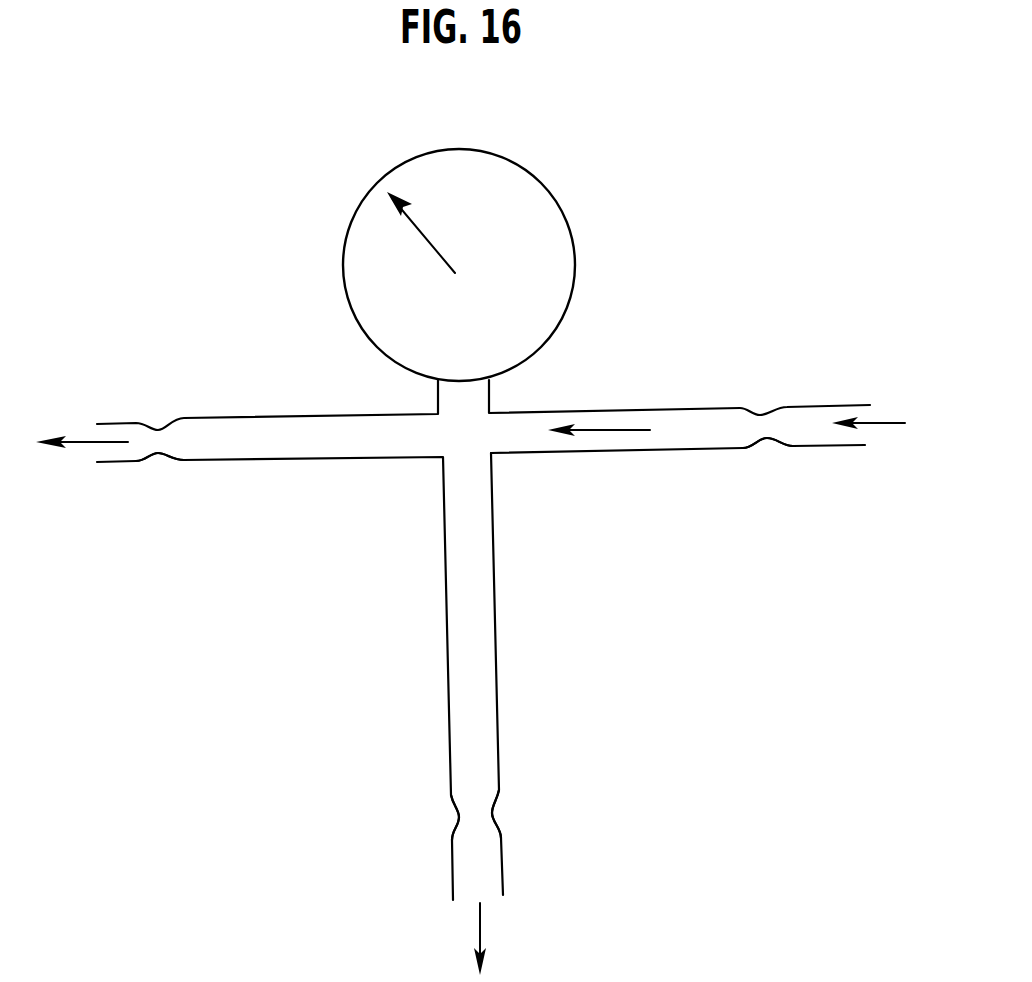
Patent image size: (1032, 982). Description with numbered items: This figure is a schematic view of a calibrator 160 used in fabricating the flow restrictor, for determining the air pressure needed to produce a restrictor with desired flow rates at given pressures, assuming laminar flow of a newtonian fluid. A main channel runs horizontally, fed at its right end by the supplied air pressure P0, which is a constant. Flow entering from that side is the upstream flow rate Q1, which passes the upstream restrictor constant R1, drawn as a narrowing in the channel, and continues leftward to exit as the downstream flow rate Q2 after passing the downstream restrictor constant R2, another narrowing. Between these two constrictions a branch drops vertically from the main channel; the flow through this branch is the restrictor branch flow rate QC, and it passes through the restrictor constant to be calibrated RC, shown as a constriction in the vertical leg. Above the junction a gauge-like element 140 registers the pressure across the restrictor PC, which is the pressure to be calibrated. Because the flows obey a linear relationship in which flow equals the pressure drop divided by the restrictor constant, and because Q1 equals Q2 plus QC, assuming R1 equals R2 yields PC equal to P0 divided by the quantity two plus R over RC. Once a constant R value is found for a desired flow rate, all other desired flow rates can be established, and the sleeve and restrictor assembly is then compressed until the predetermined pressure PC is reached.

The compliant chamber / pressure gauge 140 is at (560, 327).
The calibrator 160 is at (325, 379).
The pressure across the restrictor PC is at (537, 178).
The supplied air pressure P0 is at (893, 420).
The upstream flow rate Q1 is at (625, 430).
The downstream flow rate Q2 is at (82, 443).
The restrictor branch flow rate QC is at (481, 933).
The upstream restrictor constant R1 is at (775, 440).
The downstream restrictor constant R2 is at (163, 453).
The restrictor constant to be calibrated RC is at (493, 820).